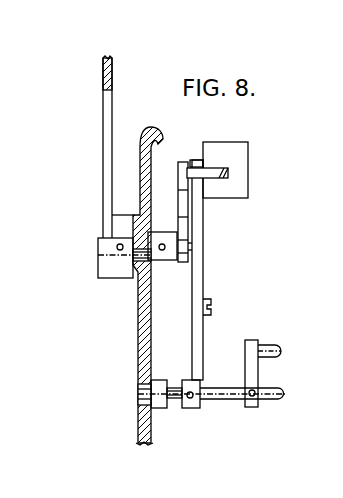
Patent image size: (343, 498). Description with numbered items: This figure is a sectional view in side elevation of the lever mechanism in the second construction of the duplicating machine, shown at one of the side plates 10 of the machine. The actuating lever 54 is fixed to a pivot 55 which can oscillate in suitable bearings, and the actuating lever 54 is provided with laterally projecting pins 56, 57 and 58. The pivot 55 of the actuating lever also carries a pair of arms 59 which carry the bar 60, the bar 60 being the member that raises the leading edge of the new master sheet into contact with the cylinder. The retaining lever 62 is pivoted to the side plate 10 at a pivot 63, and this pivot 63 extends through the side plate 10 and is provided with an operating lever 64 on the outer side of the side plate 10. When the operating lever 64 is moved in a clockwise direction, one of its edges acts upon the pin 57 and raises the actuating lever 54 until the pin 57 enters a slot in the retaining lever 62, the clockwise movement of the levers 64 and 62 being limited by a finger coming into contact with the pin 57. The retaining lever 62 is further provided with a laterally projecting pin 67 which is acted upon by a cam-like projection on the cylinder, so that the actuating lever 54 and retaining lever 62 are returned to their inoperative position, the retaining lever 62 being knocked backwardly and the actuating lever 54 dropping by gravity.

The side plate 10 is at (139, 333).
The actuating lever 54 is at (198, 277).
The pivot 55 is at (227, 401).
The pin 56 is at (212, 306).
The pin 57 is at (196, 241).
The pin 58 is at (230, 173).
The arms 59 is at (248, 372).
The bar 60 is at (267, 348).
The retaining lever 62 is at (183, 161).
The pivot 63 is at (135, 260).
The operating lever 64 is at (108, 110).
The pin 67 is at (208, 178).